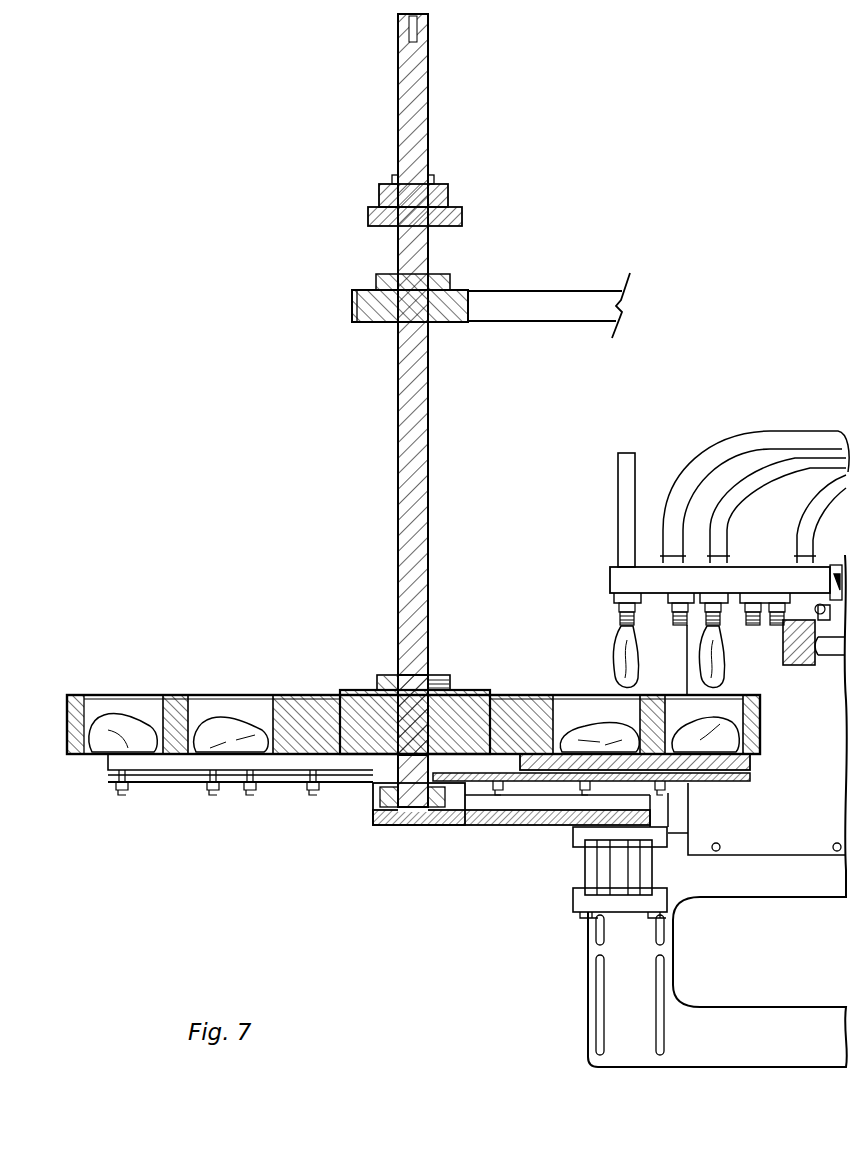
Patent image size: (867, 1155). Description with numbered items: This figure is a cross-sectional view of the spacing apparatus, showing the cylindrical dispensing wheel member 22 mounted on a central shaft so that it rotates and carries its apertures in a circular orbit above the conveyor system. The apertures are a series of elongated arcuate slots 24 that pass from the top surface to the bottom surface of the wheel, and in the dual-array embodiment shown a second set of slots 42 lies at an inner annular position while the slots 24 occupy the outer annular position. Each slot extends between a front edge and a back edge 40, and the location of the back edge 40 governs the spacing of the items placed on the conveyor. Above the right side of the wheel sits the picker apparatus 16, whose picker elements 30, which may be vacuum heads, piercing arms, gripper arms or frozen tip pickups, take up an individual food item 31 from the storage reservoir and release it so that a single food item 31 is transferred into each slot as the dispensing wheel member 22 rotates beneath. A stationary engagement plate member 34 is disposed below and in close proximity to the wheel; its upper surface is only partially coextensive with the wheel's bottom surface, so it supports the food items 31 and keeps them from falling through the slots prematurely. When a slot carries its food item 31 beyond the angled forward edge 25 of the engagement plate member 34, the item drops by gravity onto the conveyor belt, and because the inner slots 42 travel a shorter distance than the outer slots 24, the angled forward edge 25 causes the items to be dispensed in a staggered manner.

The picker apparatus 16 is at (736, 400).
The dispensing wheel member 22 is at (67, 718).
The elongated arcuate slots 24 is at (162, 717).
The forward edge 25 is at (233, 764).
The picker elements 30 is at (614, 579).
The food item 31 is at (602, 733).
The engagement plate member 34 is at (172, 762).
The back edge 40 is at (222, 703).
The second set of slots 42 is at (273, 716).